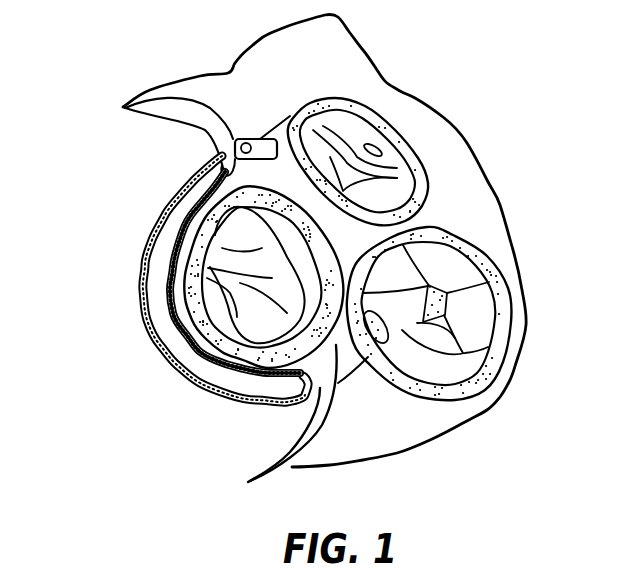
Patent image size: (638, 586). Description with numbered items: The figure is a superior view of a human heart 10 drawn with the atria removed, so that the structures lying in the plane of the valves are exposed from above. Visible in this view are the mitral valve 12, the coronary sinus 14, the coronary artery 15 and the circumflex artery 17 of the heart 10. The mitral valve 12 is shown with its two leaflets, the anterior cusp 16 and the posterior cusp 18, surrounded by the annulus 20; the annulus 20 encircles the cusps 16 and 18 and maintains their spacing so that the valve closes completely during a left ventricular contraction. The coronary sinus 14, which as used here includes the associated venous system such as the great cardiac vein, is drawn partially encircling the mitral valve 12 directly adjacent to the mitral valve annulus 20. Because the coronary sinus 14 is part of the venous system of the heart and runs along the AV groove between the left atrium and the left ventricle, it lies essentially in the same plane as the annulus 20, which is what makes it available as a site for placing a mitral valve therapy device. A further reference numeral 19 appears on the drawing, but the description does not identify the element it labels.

The human heart 10 is at (459, 104).
The mitral valve 12 is at (322, 335).
The coronary sinus 14 is at (142, 281).
The coronary artery 15 is at (251, 138).
The anterior cusp 16 is at (218, 248).
The circumflex artery 17 is at (240, 147).
The posterior cusp 18 is at (170, 330).
The inner band proximal section 19 is at (216, 171).
The annulus 20 is at (177, 368).